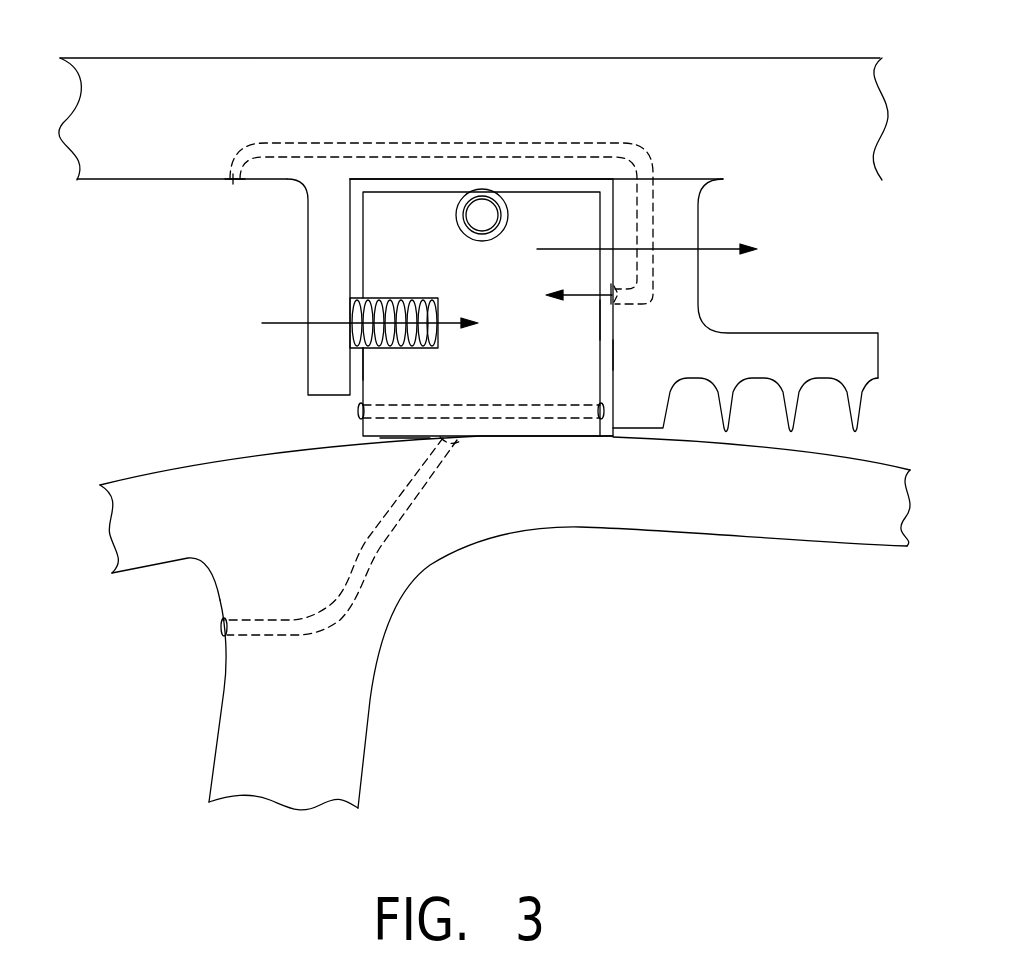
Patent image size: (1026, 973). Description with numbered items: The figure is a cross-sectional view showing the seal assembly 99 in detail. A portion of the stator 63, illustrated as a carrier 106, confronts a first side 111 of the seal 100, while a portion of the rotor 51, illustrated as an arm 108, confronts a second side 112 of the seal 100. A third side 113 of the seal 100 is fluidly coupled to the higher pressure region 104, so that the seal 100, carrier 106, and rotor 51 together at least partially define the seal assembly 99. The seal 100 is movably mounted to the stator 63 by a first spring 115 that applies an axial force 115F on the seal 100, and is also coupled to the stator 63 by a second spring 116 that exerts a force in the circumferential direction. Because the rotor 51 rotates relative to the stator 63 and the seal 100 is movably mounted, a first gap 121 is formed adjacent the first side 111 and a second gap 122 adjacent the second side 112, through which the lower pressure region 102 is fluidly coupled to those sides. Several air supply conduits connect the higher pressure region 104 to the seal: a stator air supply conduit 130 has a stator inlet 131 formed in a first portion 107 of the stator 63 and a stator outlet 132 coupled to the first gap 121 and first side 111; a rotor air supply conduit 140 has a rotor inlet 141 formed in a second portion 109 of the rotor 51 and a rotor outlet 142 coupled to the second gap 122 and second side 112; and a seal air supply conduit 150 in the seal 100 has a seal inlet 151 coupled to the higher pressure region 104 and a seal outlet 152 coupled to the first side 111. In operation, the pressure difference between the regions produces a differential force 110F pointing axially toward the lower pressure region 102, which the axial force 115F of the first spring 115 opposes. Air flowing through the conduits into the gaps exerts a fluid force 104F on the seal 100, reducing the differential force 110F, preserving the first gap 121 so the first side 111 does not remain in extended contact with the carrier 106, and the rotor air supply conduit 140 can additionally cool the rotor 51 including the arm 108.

The seal assembly 99 is at (46, 78).
The stator 63 is at (354, 80).
The higher pressure region 104 is at (165, 310).
The lower pressure region 102 is at (850, 261).
The carrier 106 is at (678, 293).
The arm 108 is at (677, 500).
The second portion 109 is at (238, 608).
The rotor 51 is at (242, 703).
The seal 100 is at (398, 249).
The first portion 107 is at (233, 178).
The stator air supply conduit 130 is at (441, 143).
The stator inlet 131 is at (230, 185).
The stator outlet 132 is at (615, 300).
The second side 112 is at (530, 438).
The third side 113 is at (363, 367).
The first side 111 is at (598, 337).
The first gap 121 is at (612, 346).
The second spring 116 is at (490, 222).
The first spring 115 is at (380, 305).
The axial force 115F is at (448, 320).
The fluid force 104F is at (585, 292).
The differential force 110F is at (705, 245).
The seal air supply conduit 150 is at (427, 400).
The seal inlet 151 is at (358, 412).
The seal outlet 152 is at (600, 405).
The second gap 122 is at (405, 436).
The rotor air supply conduit 140 is at (362, 540).
The rotor inlet 141 is at (218, 622).
The rotor outlet 142 is at (462, 445).